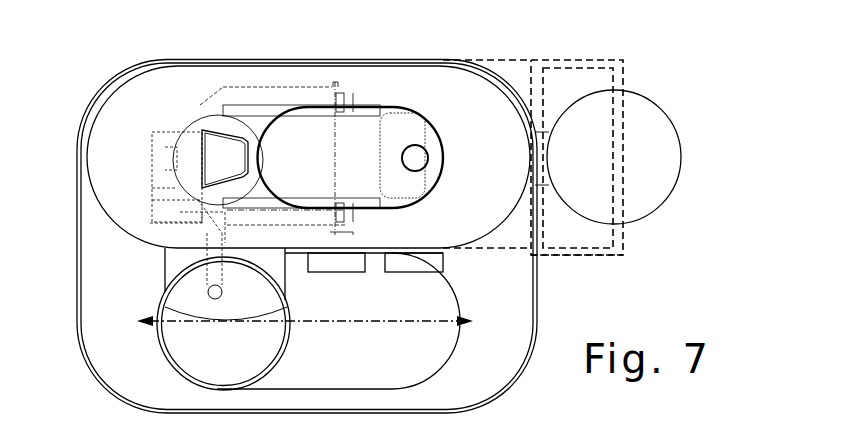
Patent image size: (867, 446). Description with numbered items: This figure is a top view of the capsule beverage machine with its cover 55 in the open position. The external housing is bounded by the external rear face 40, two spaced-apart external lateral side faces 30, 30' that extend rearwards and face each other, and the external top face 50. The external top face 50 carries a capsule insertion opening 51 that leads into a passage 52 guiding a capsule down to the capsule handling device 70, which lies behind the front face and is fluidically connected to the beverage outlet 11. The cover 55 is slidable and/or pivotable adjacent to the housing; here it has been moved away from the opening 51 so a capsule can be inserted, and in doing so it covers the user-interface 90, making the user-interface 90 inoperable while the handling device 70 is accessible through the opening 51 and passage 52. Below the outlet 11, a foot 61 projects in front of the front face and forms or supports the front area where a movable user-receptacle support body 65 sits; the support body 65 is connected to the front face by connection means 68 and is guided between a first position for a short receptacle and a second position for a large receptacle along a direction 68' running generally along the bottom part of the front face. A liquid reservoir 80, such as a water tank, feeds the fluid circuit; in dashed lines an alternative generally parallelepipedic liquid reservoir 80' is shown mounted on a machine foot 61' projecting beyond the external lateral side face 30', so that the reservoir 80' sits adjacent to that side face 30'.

The external rear face 40 is at (178, 60).
The external lateral side face 30 is at (277, 236).
The external top face 50 is at (115, 130).
The capsule insertion opening 51 is at (214, 130).
The passage 52 is at (212, 153).
The capsule handling device 70 is at (344, 89).
The cover 55 is at (403, 130).
The user-interface 90 is at (412, 157).
The foot 61 is at (237, 318).
The user-receptacle support body 65 is at (182, 342).
The beverage outlet 11 is at (220, 292).
The connection means 68 is at (444, 321).
The direction 68' is at (305, 346).
The external lateral side face 30' is at (533, 135).
The liquid reservoir 80' is at (591, 133).
The machine foot 61' is at (584, 284).
The liquid reservoir 80 is at (623, 142).